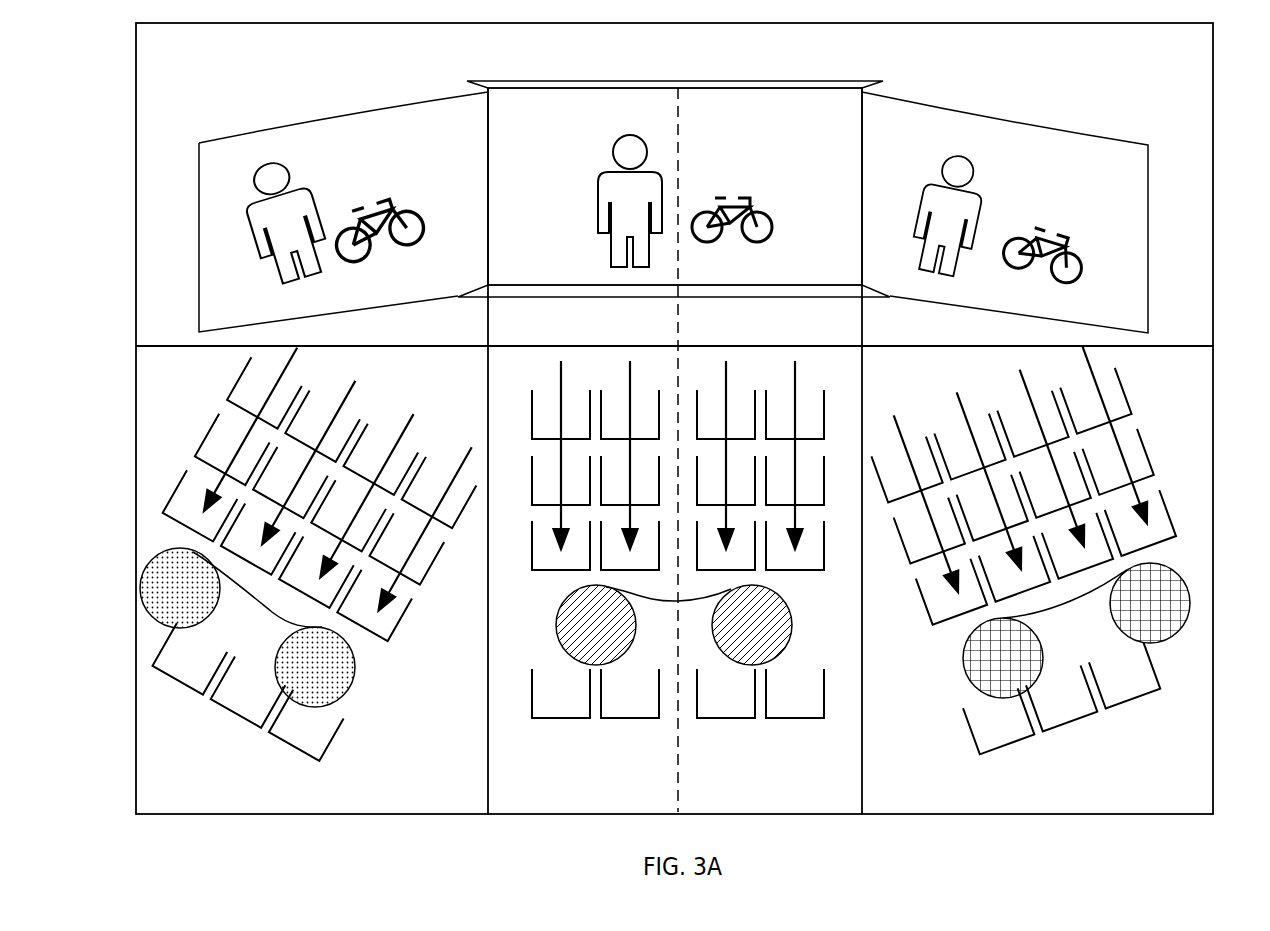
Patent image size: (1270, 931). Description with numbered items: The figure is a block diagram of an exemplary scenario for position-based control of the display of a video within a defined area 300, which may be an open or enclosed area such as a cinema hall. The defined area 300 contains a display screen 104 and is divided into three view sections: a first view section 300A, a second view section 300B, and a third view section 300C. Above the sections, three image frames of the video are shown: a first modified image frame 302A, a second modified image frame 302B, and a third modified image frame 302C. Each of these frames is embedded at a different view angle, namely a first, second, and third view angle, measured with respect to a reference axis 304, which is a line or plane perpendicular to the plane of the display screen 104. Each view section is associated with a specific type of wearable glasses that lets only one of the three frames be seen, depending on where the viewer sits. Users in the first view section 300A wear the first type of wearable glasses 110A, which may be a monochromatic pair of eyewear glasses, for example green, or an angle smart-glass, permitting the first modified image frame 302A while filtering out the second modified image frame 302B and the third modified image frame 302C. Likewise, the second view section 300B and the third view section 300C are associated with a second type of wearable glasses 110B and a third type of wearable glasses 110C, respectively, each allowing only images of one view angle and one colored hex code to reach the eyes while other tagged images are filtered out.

The defined area 300 is at (1214, 270).
The first modified image frame 302A is at (328, 117).
The second modified image frame 302B is at (562, 87).
The third modified image frame 302C is at (965, 110).
The reference axis 304 is at (682, 115).
The display screen 104 is at (798, 80).
The first view section 300A is at (292, 560).
The second view section 300B is at (693, 576).
The third view section 300C is at (1042, 565).
The first type of wearable glasses 110A is at (342, 693).
The second type of wearable glasses 110B is at (793, 635).
The third type of wearable glasses 110C is at (968, 672).